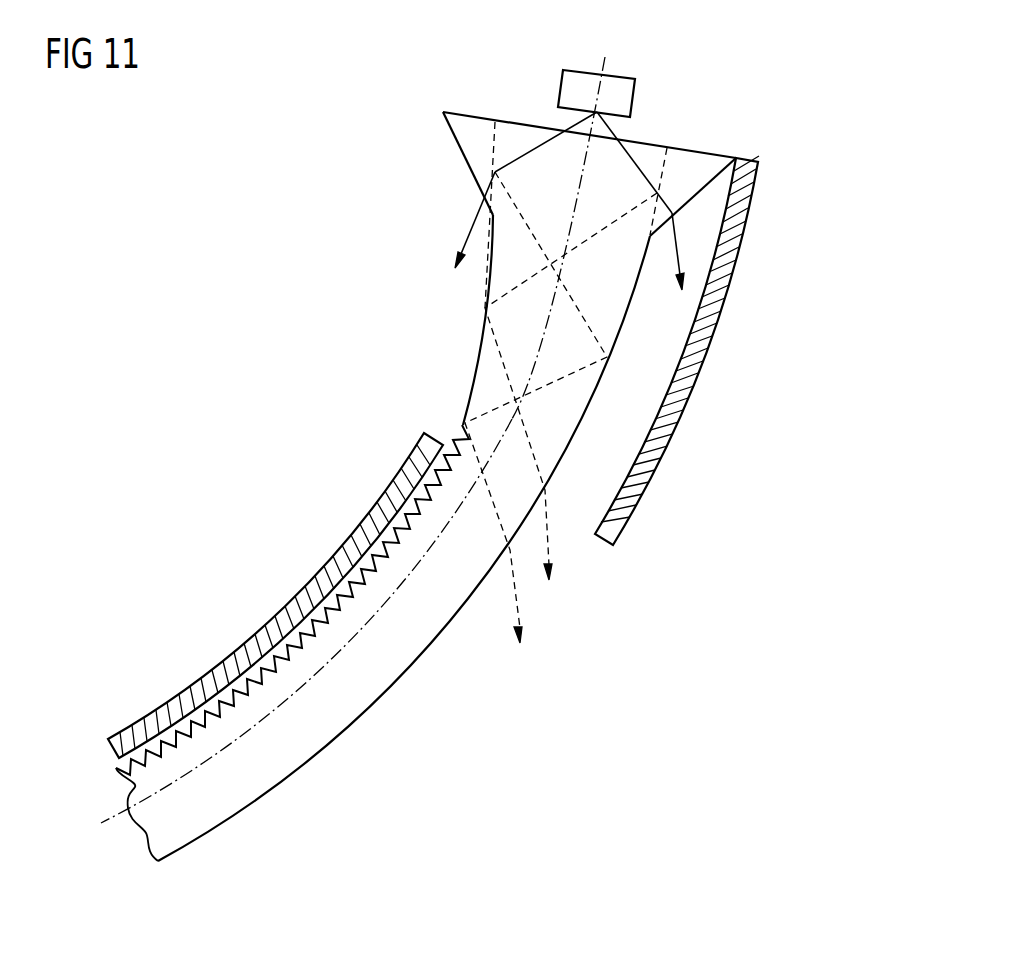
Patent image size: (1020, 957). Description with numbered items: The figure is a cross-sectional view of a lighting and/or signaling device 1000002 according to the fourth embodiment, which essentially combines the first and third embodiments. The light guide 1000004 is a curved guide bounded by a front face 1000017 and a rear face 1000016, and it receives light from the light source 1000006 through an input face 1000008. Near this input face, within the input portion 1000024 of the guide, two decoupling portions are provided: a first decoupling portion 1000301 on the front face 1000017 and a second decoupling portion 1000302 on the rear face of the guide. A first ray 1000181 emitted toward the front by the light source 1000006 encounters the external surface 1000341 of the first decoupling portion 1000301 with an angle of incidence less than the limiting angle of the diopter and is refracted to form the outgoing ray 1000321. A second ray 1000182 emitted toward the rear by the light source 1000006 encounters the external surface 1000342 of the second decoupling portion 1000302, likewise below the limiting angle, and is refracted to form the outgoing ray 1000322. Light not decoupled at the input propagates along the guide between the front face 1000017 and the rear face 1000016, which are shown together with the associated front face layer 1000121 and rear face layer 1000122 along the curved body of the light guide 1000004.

The lighting and/or signaling device 1000002 is at (277, 149).
The light guide 1000004 is at (274, 568).
The light source 1000006 is at (566, 82).
The input face 1000008 is at (650, 142).
The rear face 1000016 is at (118, 767).
The front face 1000017 is at (300, 768).
The input portion 1000024 is at (413, 114).
The front face layer 1000121 is at (652, 452).
The rear face layer 1000122 is at (191, 693).
The first ray 1000181 is at (637, 127).
The second ray 1000182 is at (557, 116).
The first decoupling portion 1000301 is at (702, 167).
The second decoupling portion 1000302 is at (460, 132).
The outgoing ray 1000321 is at (678, 252).
The outgoing ray 1000322 is at (463, 260).
The external surface of first decoupling portion 1000341 is at (706, 190).
The external surface of second decoupling portion 1000342 is at (468, 165).